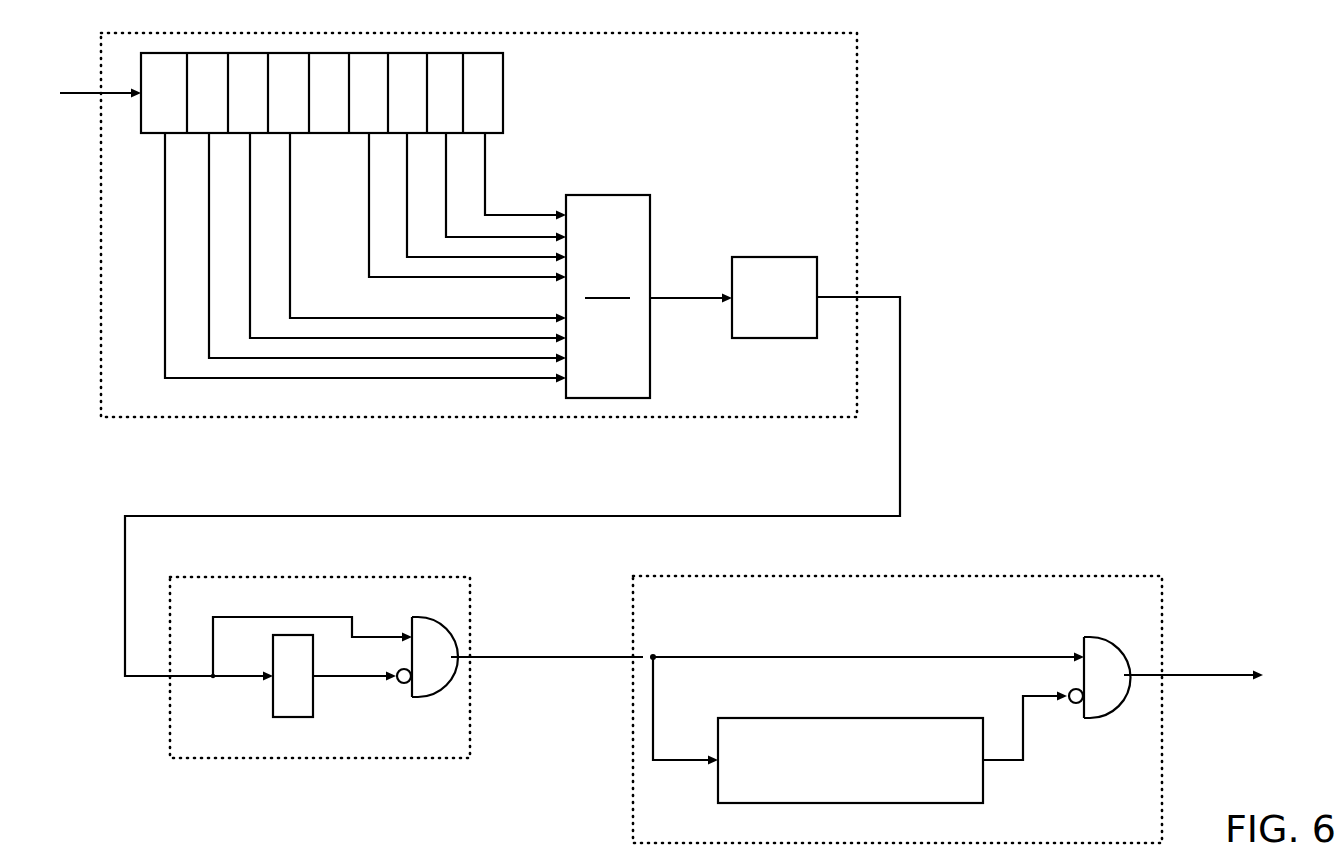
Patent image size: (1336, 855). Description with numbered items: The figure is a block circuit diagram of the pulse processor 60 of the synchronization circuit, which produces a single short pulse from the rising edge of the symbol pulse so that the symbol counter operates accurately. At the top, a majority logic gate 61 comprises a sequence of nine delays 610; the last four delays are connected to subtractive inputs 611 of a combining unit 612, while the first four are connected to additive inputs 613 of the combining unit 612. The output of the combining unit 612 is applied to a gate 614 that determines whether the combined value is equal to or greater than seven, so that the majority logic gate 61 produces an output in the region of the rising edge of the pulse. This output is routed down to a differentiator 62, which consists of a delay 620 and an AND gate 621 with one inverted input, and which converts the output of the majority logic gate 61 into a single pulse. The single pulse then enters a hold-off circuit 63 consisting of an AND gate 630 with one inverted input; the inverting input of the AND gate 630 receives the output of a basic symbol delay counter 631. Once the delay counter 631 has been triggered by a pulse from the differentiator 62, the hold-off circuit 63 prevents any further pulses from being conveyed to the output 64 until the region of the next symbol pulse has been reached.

The pulse processor 60 is at (1072, 211).
The majority logic gate 61 is at (793, 33).
The delays 610 is at (505, 93).
The subtractive inputs 611 is at (535, 228).
The combining unit 612 is at (651, 221).
The additive inputs 613 is at (546, 367).
The gate 614 is at (774, 340).
The differentiator 62 is at (405, 577).
The delay 620 is at (313, 717).
The AND gate 621 is at (422, 697).
The hold-off circuit 63 is at (1103, 576).
The AND gate 630 is at (1095, 718).
The basic symbol delay counter 631 is at (983, 790).
The output 64 is at (1185, 675).